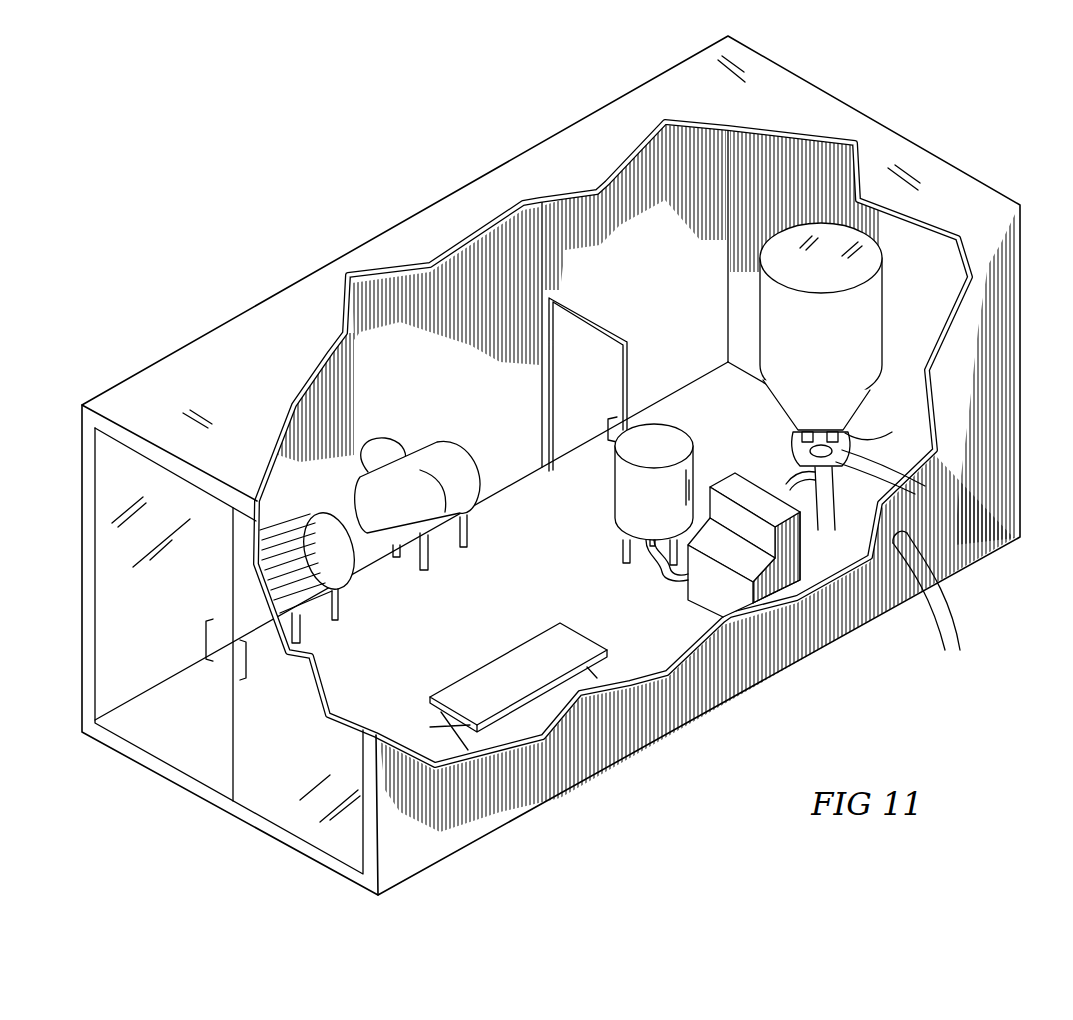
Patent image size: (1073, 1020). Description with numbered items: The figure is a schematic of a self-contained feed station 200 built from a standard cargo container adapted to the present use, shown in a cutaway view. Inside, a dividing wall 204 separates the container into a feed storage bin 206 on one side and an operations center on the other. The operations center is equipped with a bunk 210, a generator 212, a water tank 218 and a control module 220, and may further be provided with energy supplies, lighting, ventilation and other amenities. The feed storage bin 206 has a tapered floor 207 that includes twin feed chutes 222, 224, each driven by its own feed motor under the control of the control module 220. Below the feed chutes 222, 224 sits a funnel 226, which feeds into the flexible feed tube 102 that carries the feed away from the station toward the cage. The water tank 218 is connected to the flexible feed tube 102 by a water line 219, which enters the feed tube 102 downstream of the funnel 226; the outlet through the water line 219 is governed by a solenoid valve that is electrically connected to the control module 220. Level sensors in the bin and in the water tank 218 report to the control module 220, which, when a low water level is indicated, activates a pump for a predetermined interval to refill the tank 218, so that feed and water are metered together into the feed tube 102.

The feed station 200 is at (328, 228).
The dividing wall 204 is at (572, 288).
The feed storage bin 206 is at (801, 349).
The tapered floor 207 is at (724, 368).
The bunk 210 is at (507, 672).
The generator 212 is at (320, 517).
The water tank 218 is at (633, 510).
The water line 219 is at (655, 578).
The control module 220 is at (710, 592).
The feed chute 222 is at (793, 437).
The feed chute 224 is at (881, 419).
The funnel 226 is at (897, 487).
The flexible feed tube 102 is at (955, 612).